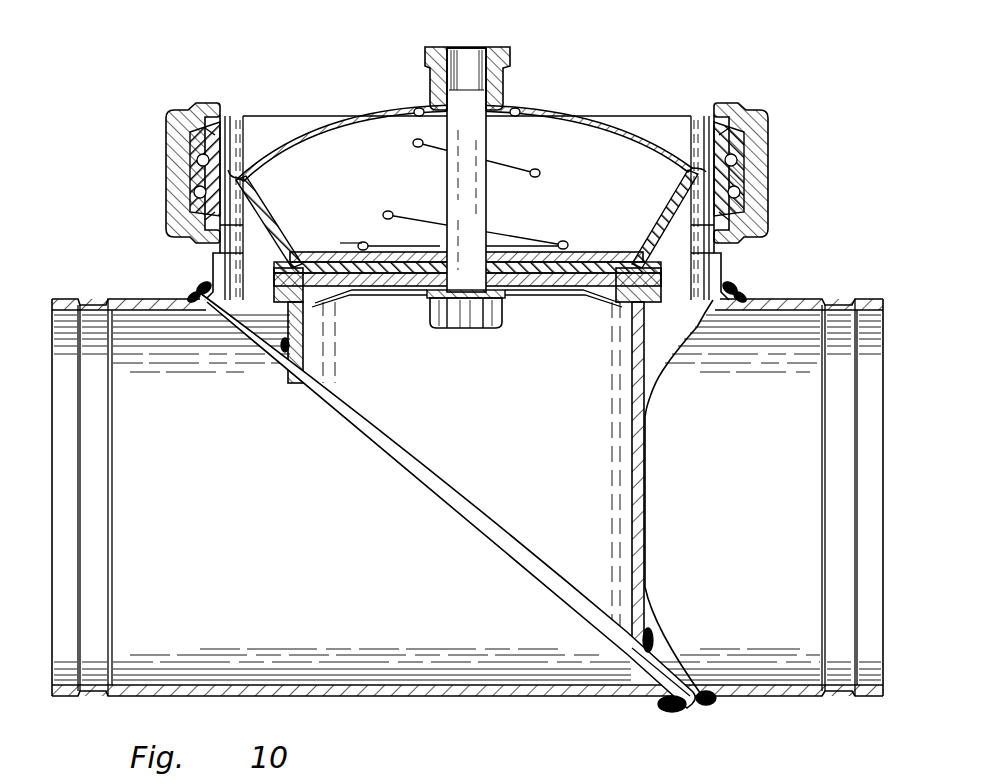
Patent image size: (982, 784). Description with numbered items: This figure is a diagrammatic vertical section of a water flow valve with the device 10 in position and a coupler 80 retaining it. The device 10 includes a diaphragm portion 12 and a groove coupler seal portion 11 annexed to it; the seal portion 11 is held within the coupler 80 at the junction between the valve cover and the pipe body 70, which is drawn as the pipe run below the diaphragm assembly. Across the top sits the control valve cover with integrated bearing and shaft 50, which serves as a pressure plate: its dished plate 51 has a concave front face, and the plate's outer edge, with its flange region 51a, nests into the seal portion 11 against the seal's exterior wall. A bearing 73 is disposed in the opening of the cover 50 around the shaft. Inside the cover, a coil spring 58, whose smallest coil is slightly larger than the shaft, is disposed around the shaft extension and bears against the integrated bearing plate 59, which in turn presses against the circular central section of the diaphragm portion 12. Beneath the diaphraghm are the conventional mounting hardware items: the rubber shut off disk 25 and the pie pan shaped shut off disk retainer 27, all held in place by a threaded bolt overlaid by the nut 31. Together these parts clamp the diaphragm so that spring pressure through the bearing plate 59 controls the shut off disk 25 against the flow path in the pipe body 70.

The device 10 is at (756, 160).
The groove coupler seal portion 11 is at (172, 156).
The diaphragm portion 12 is at (362, 289).
The shut off disk 25 is at (306, 305).
The shut off disk retainer 27 is at (540, 290).
The nut 31 is at (470, 328).
The control valve cover with integrated bearing and shaft 50 is at (560, 112).
The dished plate 51 is at (376, 115).
The cover rim portion 51a is at (618, 118).
The coil spring 58 is at (545, 174).
The integrated bearing plate 59 is at (340, 243).
The pipe body 70 is at (136, 298).
The bearing 73 is at (510, 48).
The coupler 80 is at (762, 226).